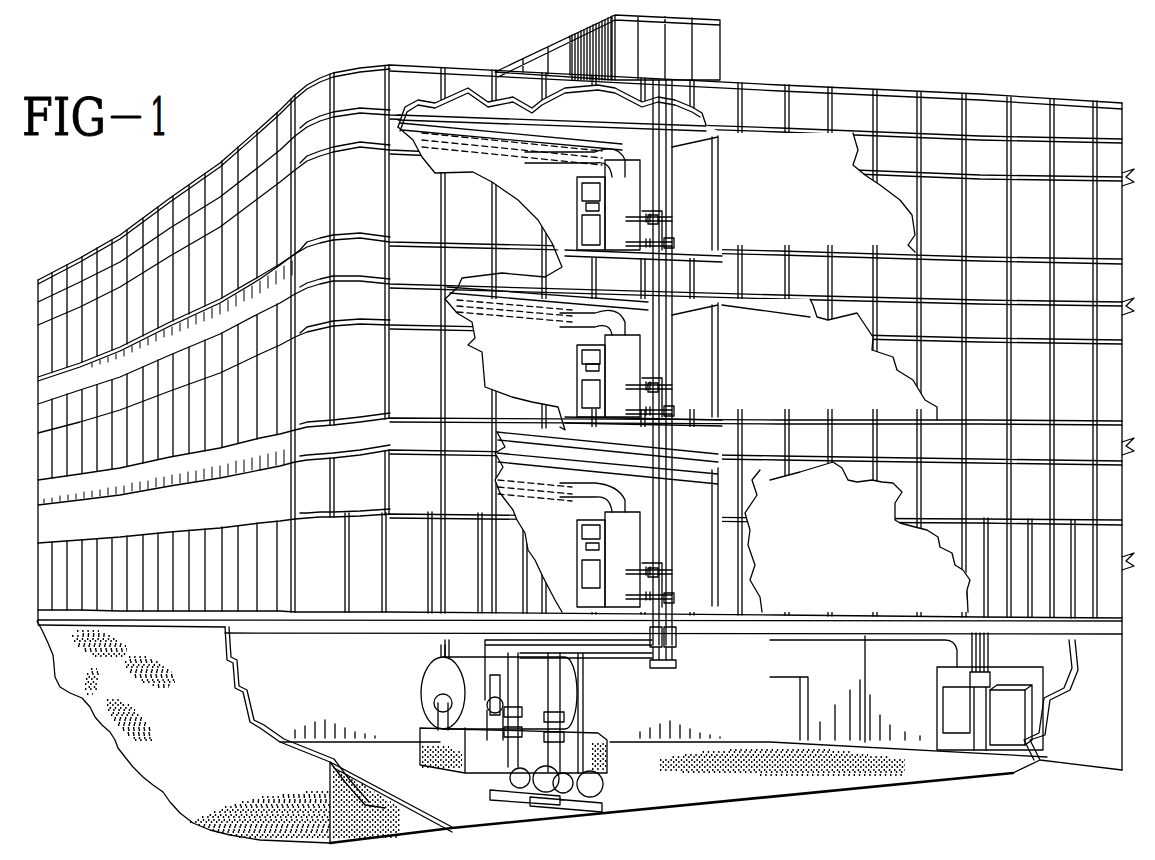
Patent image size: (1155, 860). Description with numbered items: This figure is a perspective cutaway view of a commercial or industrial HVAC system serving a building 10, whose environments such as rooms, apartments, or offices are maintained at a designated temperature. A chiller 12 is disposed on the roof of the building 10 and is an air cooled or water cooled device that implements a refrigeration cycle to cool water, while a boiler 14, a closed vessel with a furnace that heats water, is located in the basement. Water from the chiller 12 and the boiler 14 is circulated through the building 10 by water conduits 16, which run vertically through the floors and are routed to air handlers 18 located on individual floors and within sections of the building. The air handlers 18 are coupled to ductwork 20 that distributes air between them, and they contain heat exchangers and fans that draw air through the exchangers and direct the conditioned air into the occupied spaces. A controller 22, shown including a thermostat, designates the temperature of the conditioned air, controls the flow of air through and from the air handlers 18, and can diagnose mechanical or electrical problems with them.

The building 10 is at (988, 98).
The chiller 12 is at (560, 42).
The boiler 14 is at (428, 688).
The water conduits 16 is at (667, 578).
The air handlers 18 is at (624, 184).
The ductwork 20 is at (535, 158).
The controller 22 is at (600, 207).